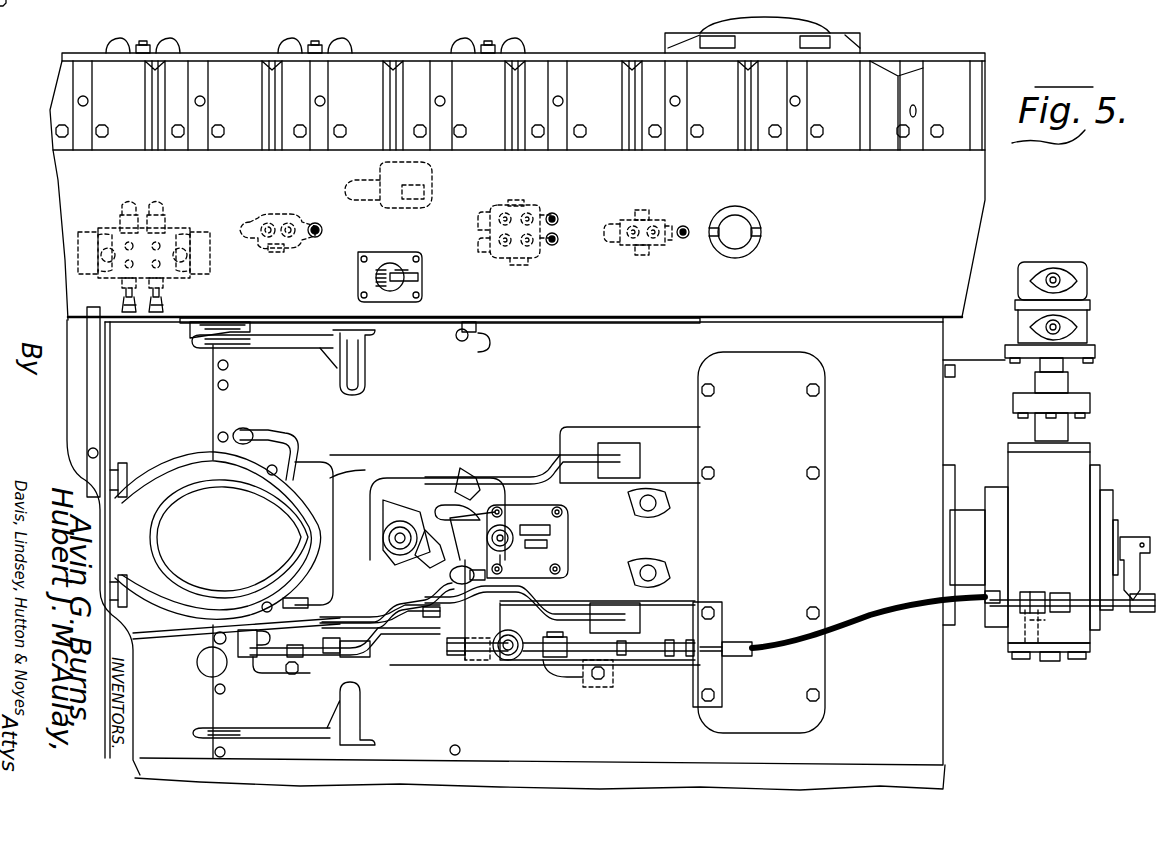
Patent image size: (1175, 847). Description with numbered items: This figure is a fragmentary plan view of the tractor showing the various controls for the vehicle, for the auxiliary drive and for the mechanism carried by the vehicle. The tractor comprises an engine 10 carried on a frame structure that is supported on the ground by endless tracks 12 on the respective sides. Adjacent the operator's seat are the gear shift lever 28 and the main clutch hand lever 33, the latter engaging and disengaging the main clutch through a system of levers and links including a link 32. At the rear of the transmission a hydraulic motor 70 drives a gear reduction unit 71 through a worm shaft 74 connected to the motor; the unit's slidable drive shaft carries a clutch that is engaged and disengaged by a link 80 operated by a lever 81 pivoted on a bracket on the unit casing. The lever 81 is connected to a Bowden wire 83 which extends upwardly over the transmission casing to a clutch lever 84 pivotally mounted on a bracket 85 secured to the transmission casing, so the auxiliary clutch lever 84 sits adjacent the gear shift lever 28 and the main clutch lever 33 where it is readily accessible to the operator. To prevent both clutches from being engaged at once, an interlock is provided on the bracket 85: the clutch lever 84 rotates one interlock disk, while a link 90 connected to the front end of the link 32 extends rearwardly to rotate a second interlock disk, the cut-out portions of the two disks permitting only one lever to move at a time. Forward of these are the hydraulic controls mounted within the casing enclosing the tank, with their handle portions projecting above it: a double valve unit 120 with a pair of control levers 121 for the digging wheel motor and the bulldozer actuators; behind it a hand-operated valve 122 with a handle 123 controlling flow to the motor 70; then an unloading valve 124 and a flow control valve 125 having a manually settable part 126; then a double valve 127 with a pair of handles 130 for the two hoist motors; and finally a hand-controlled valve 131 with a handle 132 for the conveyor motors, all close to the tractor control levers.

The engine 10 is at (70, 327).
The endless tracks 12 is at (952, 80).
The gear shift lever 28 is at (510, 520).
The link 32 is at (348, 615).
The hand lever 33 is at (388, 640).
The hydraulic motor 70 is at (1085, 280).
The gear reduction unit 71 is at (1075, 460).
The worm shaft 74 is at (1035, 446).
The link 80 is at (1126, 538).
The lever 81 is at (1128, 595).
The Bowden wire 83 is at (885, 620).
The clutch lever 84 is at (512, 658).
The bracket 85 is at (560, 662).
The link 90 is at (425, 655).
The double valve unit 120 is at (170, 238).
The control levers 121 is at (153, 312).
The hand-operated valve 122 is at (284, 220).
The handle 123 is at (318, 237).
The unloading valve 124 is at (435, 170).
The flow control valve 125 is at (416, 270).
The manually settable part 126 is at (422, 290).
The double valve 127 is at (528, 262).
The handles 130 is at (560, 243).
The hand-controlled valve 131 is at (626, 222).
The handle 132 is at (684, 226).